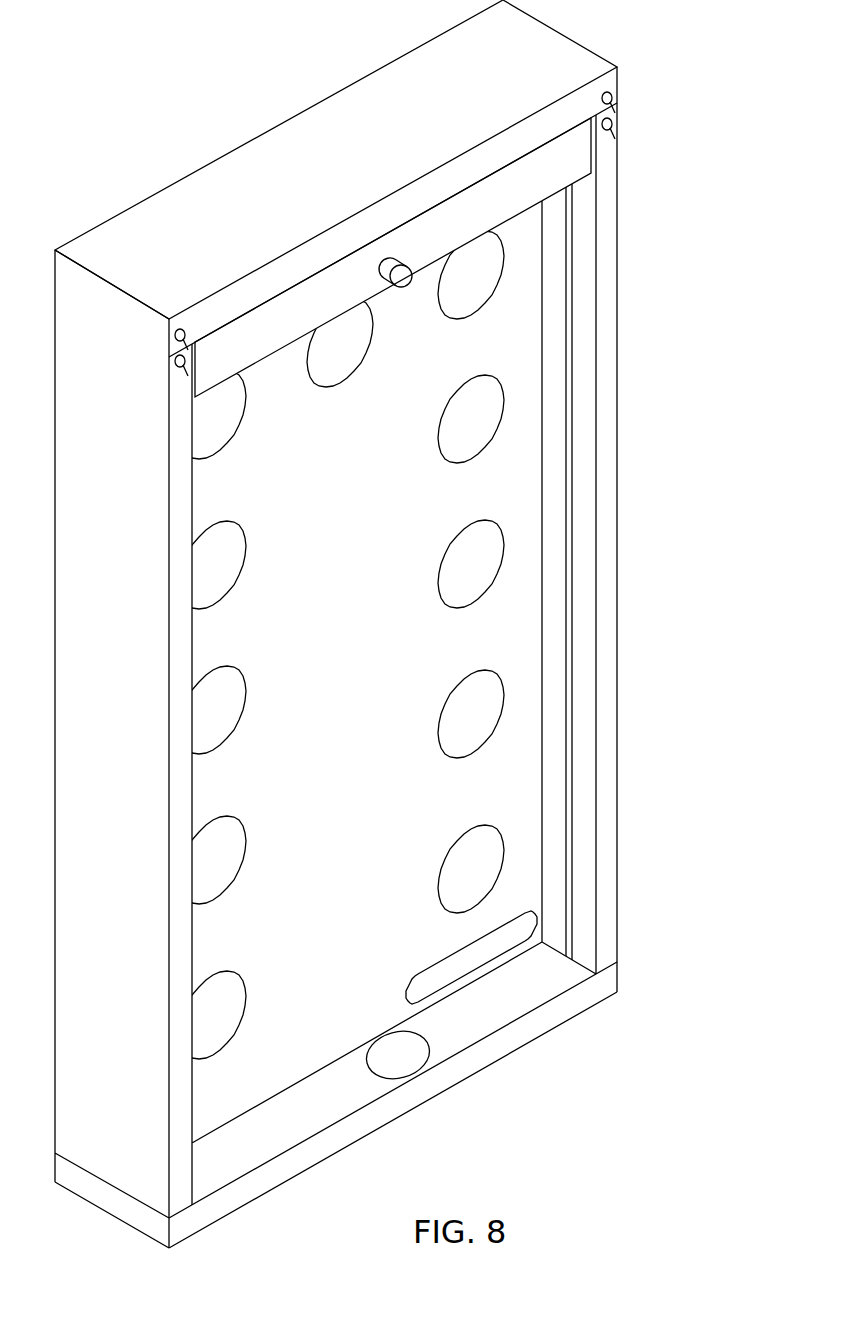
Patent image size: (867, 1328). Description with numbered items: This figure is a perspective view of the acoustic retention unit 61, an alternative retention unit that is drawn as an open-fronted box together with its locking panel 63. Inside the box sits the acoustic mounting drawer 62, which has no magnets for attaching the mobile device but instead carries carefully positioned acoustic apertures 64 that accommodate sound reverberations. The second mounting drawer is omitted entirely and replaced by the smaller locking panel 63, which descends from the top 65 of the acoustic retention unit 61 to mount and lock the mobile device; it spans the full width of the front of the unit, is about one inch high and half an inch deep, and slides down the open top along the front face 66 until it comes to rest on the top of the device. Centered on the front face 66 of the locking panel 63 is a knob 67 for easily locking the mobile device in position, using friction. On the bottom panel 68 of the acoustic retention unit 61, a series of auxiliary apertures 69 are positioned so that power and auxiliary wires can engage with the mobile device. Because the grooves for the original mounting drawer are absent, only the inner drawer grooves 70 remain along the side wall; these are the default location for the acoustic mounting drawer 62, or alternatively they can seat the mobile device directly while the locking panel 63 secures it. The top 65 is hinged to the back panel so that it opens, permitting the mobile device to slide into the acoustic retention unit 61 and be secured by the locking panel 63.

The acoustic retention unit 61 is at (125, 70).
The acoustic mounting drawer 62 is at (298, 852).
The locking panel 63 is at (572, 168).
The acoustic apertures 64 is at (207, 438).
The top 65 is at (150, 243).
The front face 66 is at (210, 355).
The knob 67 is at (387, 262).
The bottom panel 68 is at (555, 970).
The auxiliary apertures 69 is at (425, 988).
The inner drawer grooves 70 is at (570, 684).